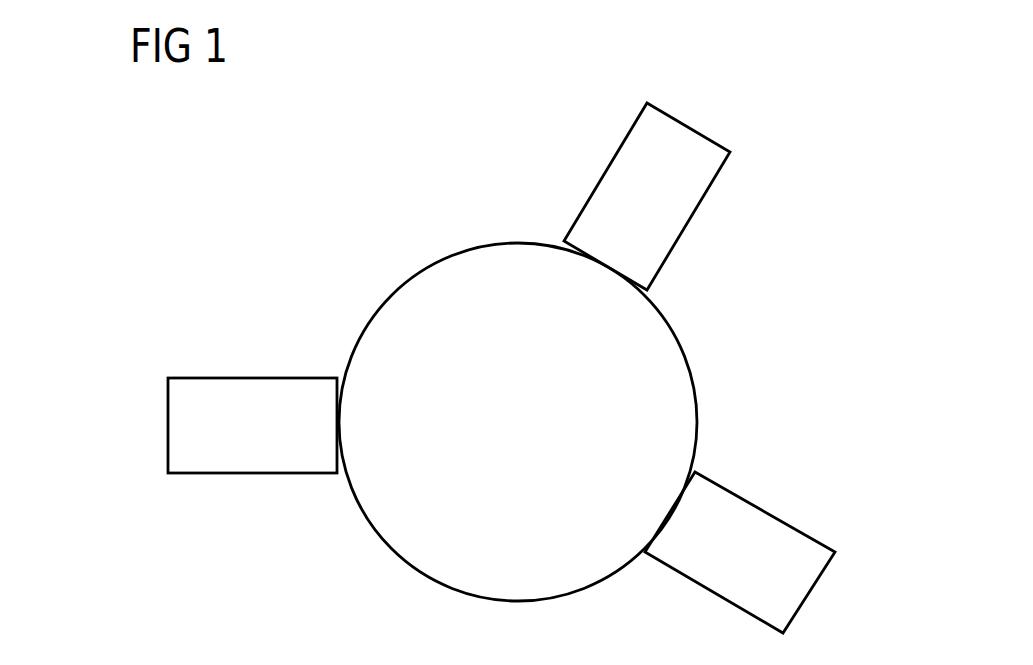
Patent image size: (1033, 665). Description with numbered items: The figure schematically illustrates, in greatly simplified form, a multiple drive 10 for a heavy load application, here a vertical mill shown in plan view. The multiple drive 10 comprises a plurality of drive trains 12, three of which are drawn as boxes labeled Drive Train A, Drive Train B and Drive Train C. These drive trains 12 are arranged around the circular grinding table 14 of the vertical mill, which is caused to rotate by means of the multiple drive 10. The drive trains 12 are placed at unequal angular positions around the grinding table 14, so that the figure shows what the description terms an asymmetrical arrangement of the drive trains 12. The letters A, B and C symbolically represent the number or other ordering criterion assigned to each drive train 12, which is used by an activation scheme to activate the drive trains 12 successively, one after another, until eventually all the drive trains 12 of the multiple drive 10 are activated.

The multiple drive 10 is at (392, 239).
The drive train 12 is at (250, 378).
The grinding table 14 is at (422, 578).